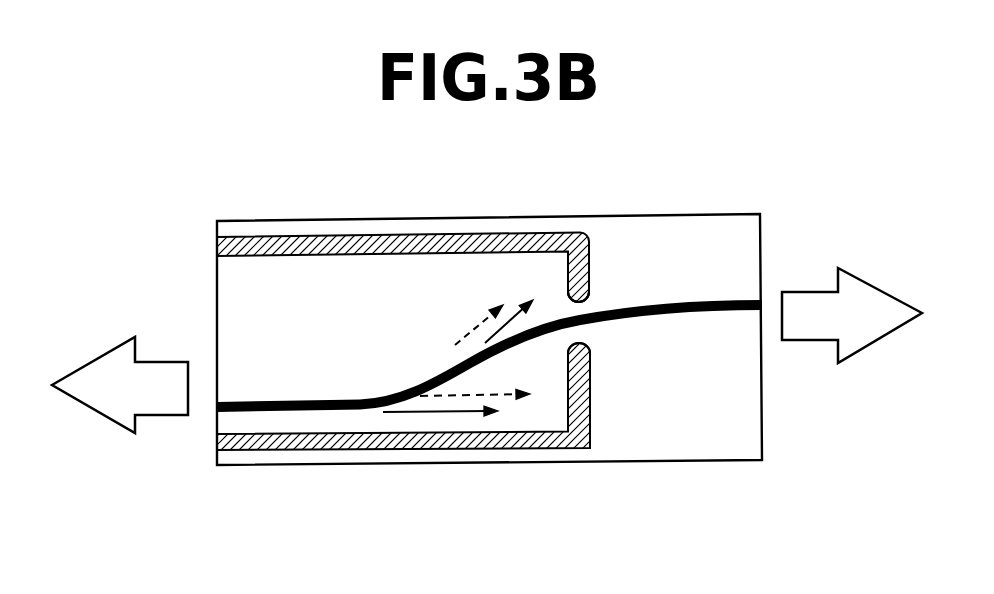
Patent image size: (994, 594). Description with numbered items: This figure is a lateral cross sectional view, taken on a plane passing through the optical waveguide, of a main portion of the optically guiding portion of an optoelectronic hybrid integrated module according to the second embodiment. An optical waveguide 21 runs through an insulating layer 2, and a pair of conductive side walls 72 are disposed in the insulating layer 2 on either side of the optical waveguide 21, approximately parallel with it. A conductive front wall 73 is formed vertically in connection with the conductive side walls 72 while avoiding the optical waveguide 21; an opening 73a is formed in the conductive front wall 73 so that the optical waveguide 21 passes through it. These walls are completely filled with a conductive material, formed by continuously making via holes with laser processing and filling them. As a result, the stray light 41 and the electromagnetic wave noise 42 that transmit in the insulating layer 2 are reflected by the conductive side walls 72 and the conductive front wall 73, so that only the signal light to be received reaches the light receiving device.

The insulating layer 2 is at (235, 297).
The optical waveguide 21 is at (722, 313).
The stray light 41 is at (467, 330).
The electromagnetic wave noise 42 is at (527, 303).
The conductive side walls 72 is at (300, 237).
The conductive front wall 73 is at (590, 250).
The opening 73a is at (590, 307).